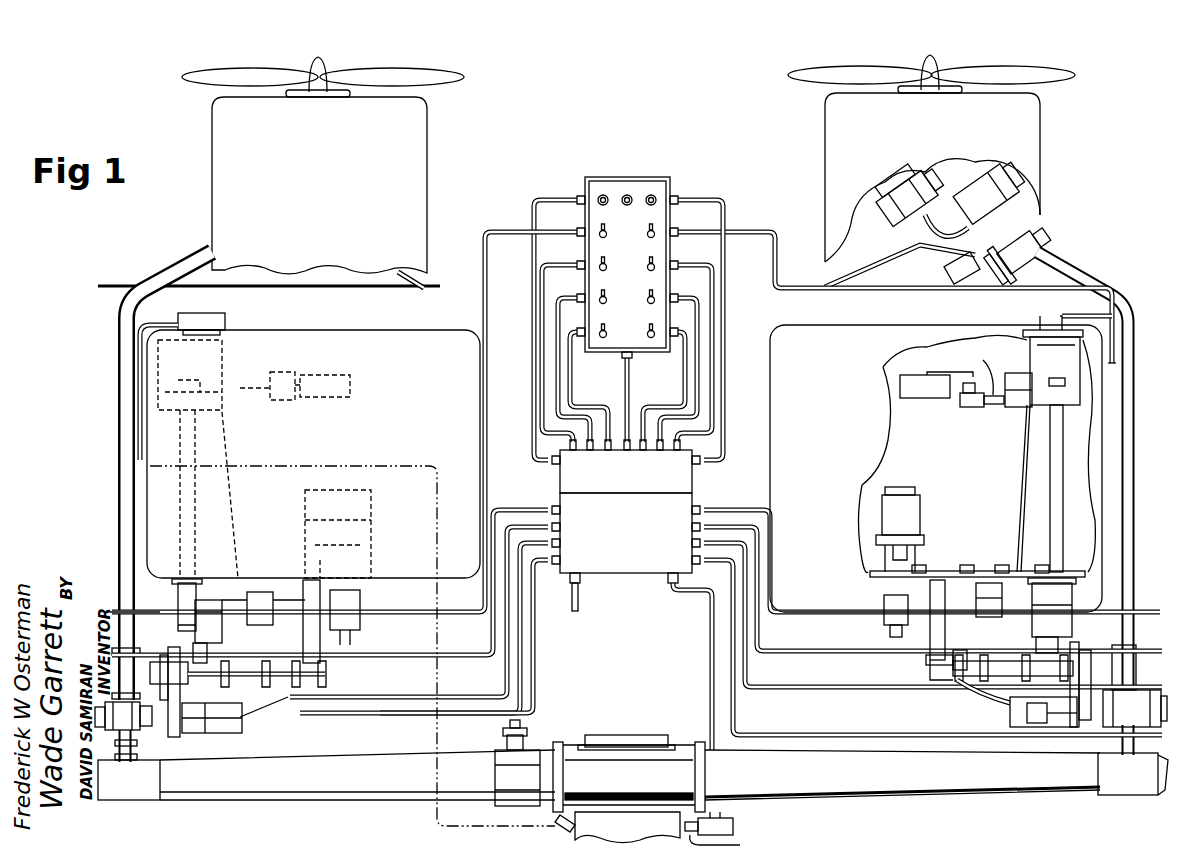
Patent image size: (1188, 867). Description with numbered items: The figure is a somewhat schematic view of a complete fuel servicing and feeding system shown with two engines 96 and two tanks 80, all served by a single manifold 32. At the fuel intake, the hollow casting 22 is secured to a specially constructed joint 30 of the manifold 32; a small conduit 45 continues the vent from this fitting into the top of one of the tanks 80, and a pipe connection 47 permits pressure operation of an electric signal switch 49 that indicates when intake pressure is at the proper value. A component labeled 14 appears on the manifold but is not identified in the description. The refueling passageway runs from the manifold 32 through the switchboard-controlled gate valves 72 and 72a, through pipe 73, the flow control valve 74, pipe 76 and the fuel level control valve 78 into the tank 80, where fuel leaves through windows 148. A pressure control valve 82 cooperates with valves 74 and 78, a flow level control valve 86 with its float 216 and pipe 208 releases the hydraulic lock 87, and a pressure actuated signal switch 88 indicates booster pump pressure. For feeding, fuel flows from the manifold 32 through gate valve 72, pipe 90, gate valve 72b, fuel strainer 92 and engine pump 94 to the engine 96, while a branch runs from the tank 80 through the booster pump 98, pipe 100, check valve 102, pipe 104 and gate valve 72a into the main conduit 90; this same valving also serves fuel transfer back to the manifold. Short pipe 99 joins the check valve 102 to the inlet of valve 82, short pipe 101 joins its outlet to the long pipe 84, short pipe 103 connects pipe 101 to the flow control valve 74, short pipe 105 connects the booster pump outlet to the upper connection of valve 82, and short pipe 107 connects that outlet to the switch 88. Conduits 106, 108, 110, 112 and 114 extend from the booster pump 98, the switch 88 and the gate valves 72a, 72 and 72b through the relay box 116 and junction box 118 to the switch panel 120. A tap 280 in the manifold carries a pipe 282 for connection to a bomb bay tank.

The fuel manifold 14 is at (648, 790).
The hollow casting 22 is at (627, 827).
The joint 30 is at (620, 745).
The manifold 32 is at (915, 800).
The small conduit 45 is at (172, 326).
The pipe connection 47 is at (745, 840).
The electric signal switch 49 is at (738, 821).
The electrically operated gate valve 72 is at (1135, 700).
The gate valve 72a is at (1080, 652).
The electrically operated gate valve 72b is at (1040, 238).
The pipe 73 is at (1060, 640).
The flow control valve 74 is at (1065, 612).
The pipe 76 is at (1056, 522).
The fuel level control valve 78 is at (1034, 352).
The tank 80 is at (478, 414).
The pressure control valve 82 is at (978, 604).
The long pipe 84 is at (1016, 506).
The flow level control valve 86 is at (968, 408).
The hydraulic lock 87 is at (1012, 405).
The pressure actuated signal switch 88 is at (885, 615).
The pipe 90 is at (117, 472).
The fuel strainer 92 is at (985, 185).
The engine pump 94 is at (905, 212).
The engine 96 is at (300, 143).
The booster pump 98 is at (922, 524).
The short pipe 99 is at (965, 648).
The pipe 100 is at (937, 625).
The short pipe 101 is at (1000, 572).
The check valve 102 is at (957, 683).
The short pipe 103 is at (1040, 566).
The pipe 104 is at (1003, 660).
The short pipe 105 is at (966, 566).
The conduit 106 is at (800, 612).
The short pipe 107 is at (924, 572).
The conduit 108 is at (808, 651).
The conduit 110 is at (796, 687).
The conduit 112 is at (795, 735).
The conduit 114 is at (748, 234).
The relay box 116 is at (627, 566).
The junction box 118 is at (568, 488).
The switch panel 120 is at (637, 186).
The windows 148 is at (1058, 378).
The pipe 208 is at (986, 372).
The float 216 is at (325, 400).
The tap 280 is at (505, 752).
The pipe 282 is at (525, 738).